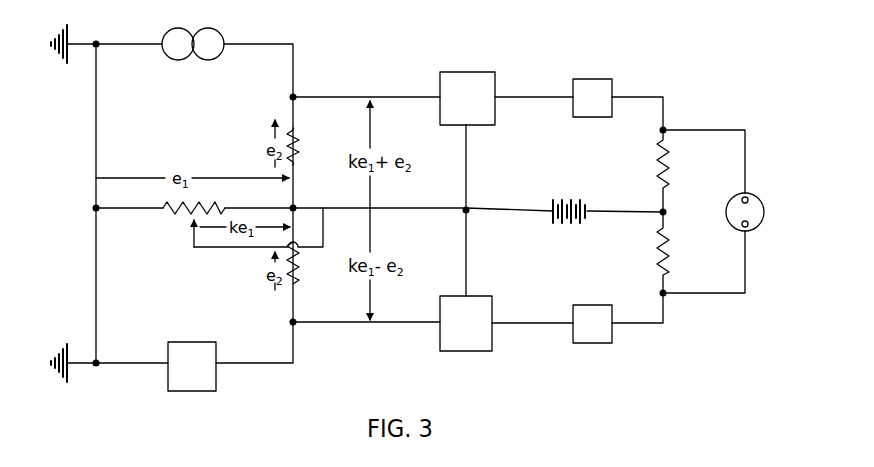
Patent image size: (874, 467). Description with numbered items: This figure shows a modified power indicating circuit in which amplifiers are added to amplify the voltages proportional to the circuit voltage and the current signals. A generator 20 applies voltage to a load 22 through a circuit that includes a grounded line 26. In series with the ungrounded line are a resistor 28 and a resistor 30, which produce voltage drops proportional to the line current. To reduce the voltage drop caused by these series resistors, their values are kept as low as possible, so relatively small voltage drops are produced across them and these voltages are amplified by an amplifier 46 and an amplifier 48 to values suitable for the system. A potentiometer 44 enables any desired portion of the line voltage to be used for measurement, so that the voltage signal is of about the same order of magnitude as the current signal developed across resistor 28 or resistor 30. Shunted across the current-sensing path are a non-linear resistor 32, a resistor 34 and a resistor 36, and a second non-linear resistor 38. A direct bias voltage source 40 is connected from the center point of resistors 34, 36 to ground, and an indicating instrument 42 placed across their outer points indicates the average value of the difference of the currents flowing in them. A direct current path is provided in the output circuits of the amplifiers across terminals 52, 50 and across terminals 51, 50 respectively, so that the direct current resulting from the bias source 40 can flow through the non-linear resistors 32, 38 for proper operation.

The generator 20 is at (220, 32).
The load 22 is at (216, 385).
The grounded line 26 is at (96, 300).
The resistor 28 is at (297, 131).
The resistor 30 is at (300, 283).
The non-linear resistor 32 is at (612, 80).
The resistor 34 is at (668, 157).
The resistor 36 is at (678, 232).
The second non-linear resistor 38 is at (612, 338).
The direct bias voltage source 40 is at (585, 200).
The indicating instrument 42 is at (756, 197).
The potentiometer 44 is at (170, 210).
The amplifier 46 is at (495, 78).
The amplifier 48 is at (492, 340).
The terminal 50 is at (466, 152).
The terminal 51 is at (500, 321).
The terminal 52 is at (502, 98).